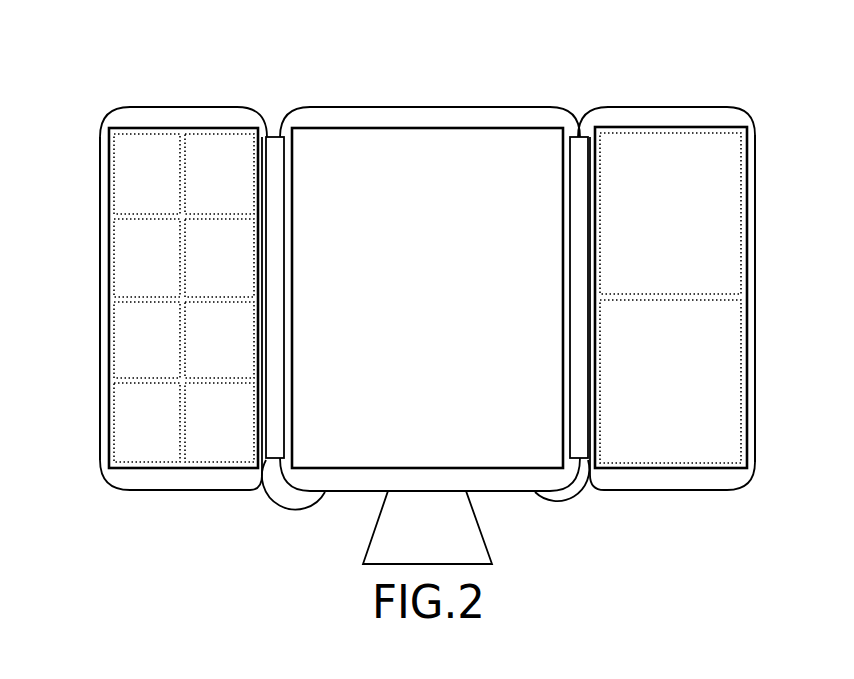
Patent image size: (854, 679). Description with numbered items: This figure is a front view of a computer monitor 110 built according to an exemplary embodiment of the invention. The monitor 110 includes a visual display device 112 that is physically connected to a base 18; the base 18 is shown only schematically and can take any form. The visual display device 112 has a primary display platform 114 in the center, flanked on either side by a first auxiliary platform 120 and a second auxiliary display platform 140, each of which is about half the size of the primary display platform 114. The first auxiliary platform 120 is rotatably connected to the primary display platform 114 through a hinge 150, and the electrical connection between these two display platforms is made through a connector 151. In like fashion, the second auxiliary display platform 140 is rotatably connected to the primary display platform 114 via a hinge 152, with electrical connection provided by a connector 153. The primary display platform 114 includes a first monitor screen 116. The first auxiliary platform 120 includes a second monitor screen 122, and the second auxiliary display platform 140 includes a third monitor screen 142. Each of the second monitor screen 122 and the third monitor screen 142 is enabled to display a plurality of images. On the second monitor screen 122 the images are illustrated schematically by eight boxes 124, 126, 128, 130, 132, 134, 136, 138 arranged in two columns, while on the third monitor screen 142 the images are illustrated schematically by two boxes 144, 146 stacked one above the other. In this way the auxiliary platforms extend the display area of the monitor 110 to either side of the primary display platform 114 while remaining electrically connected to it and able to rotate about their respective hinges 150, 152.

The monitor 110 is at (636, 70).
The visual display device 112 is at (210, 115).
The primary display platform 114 is at (416, 118).
The first monitor screen 116 is at (360, 148).
The first auxiliary platform 120 is at (150, 118).
The second monitor screen 122 is at (108, 130).
The box 124 is at (168, 186).
The box 126 is at (240, 186).
The box 128 is at (168, 270).
The box 130 is at (240, 270).
The box 132 is at (168, 350).
The box 134 is at (240, 350).
The box 136 is at (168, 435).
The box 138 is at (240, 435).
The second auxiliary display platform 140 is at (715, 108).
The third monitor screen 142 is at (740, 132).
The box 144 is at (722, 222).
The box 146 is at (718, 353).
The hinge 150 is at (273, 462).
The connector 151 is at (313, 508).
The hinge 152 is at (580, 462).
The connector 153 is at (543, 507).
The base 18 is at (453, 512).